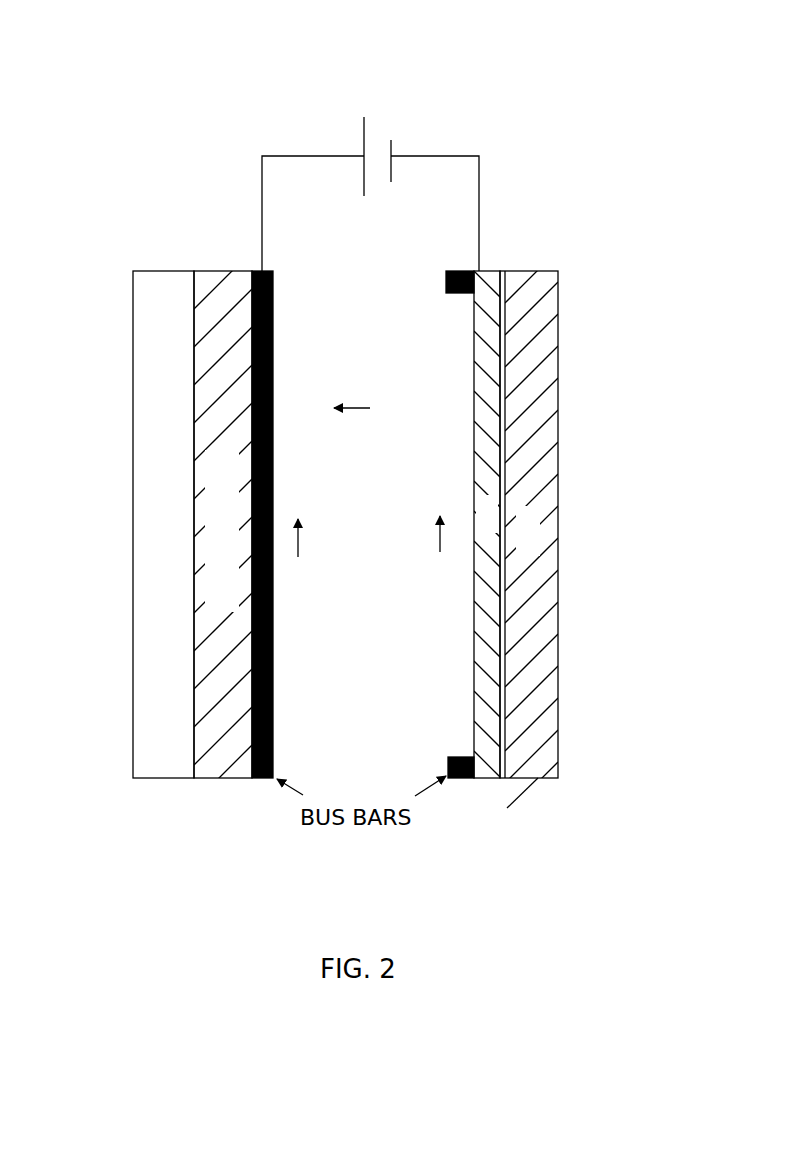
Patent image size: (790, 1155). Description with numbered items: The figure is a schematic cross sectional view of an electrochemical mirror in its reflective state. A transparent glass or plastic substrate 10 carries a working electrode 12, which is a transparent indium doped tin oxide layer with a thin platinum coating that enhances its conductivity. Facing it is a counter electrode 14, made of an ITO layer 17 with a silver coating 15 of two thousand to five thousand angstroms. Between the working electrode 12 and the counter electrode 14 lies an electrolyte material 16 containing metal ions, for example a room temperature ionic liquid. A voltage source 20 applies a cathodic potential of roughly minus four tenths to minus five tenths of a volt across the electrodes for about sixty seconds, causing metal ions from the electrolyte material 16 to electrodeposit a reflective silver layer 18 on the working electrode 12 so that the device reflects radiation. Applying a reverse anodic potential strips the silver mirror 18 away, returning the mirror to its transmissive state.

The substrate 10 is at (147, 300).
The working electrode 12 is at (210, 283).
The counter electrode 14 is at (548, 803).
The silver coating 15 is at (490, 270).
The electrolyte material 16 is at (419, 437).
The ITO layer 17 is at (547, 290).
The reflective layer 18 is at (270, 293).
The voltage source 20 is at (380, 124).